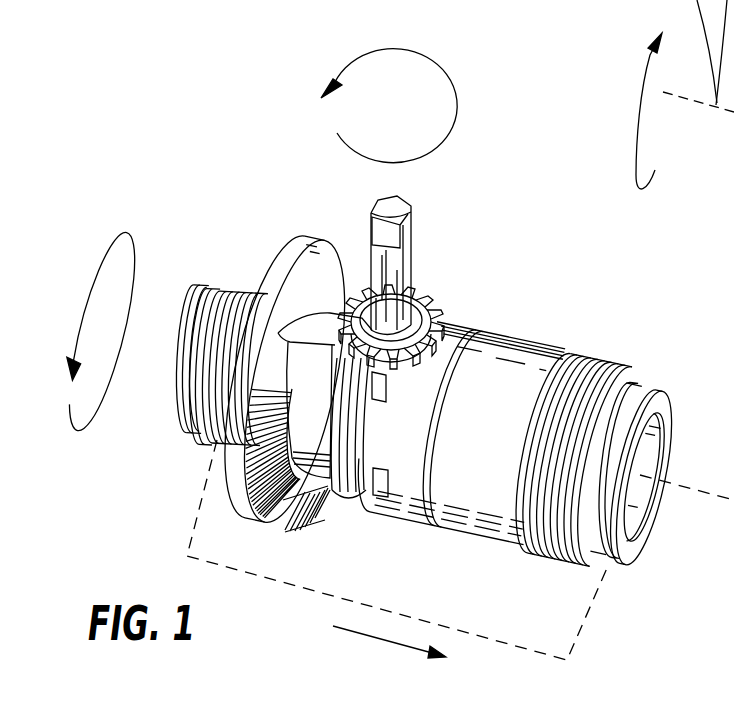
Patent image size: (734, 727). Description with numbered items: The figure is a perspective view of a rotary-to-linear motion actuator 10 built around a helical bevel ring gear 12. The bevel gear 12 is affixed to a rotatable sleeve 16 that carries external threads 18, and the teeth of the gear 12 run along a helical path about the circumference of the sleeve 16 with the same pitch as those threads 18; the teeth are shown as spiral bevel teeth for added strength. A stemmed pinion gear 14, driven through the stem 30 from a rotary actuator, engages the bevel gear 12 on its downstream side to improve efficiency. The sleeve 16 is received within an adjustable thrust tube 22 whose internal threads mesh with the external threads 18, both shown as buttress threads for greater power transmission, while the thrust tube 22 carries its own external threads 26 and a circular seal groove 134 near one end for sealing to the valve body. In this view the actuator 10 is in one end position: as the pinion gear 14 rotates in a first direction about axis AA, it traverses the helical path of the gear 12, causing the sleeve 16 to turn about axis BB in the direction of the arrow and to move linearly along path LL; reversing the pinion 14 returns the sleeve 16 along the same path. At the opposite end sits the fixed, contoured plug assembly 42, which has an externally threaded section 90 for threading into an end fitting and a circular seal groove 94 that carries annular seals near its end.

The rotary-to-linear motion actuator 10 is at (200, 148).
The helical bevel ring gear 12 is at (292, 532).
The stemmed pinion gear 14 is at (440, 318).
The rotatable sleeve 16 is at (322, 237).
The external threads 18 is at (350, 495).
The adjustable thrust tube 22 is at (540, 350).
The external threads 26 is at (612, 360).
The stem 30 is at (407, 263).
The plug assembly 42 is at (218, 283).
The externally threaded section 90 is at (215, 445).
The circular seal groove 94 is at (188, 410).
The circular seal groove 134 is at (648, 395).
The axis / first direction of pinion rotation AA is at (392, 105).
The axis of sleeve rotation BB is at (185, 352).
The linear path LL is at (362, 636).